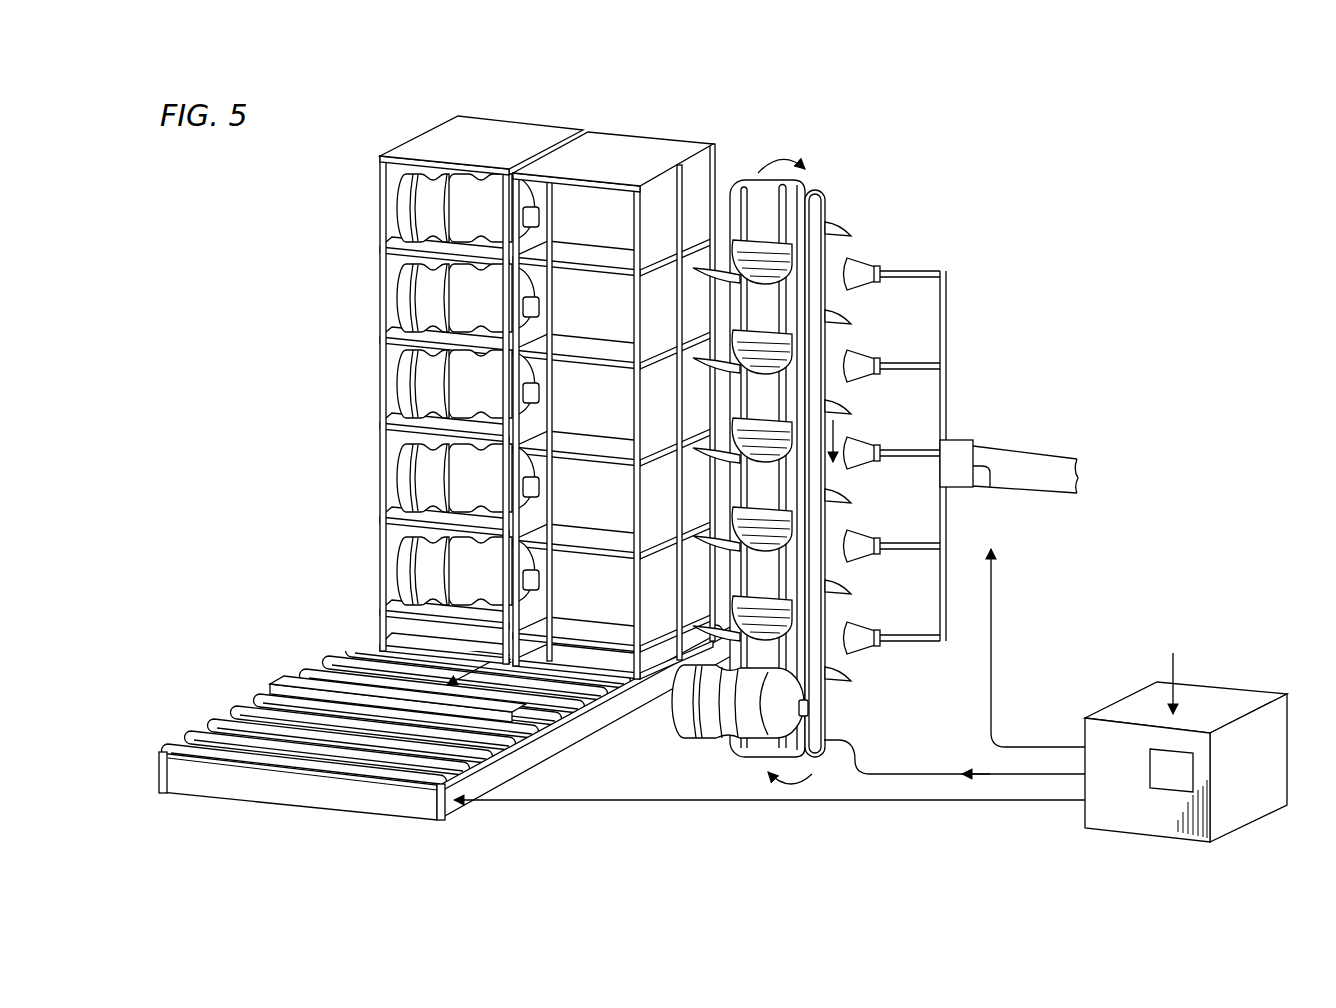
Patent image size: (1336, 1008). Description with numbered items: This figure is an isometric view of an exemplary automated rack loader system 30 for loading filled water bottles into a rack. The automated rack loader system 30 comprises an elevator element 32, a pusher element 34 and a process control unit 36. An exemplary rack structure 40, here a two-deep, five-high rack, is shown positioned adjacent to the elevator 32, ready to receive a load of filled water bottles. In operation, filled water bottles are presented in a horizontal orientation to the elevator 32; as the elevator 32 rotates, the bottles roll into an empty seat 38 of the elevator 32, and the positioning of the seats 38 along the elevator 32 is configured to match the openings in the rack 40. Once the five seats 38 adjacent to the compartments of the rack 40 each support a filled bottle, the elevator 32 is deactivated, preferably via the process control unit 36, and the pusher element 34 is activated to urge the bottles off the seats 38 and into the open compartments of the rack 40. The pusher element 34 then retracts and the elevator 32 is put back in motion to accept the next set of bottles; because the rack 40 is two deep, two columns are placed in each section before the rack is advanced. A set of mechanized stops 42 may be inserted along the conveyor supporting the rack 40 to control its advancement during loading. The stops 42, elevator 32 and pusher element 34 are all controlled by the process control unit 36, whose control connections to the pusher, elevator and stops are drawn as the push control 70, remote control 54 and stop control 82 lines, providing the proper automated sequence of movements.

The automated rack loader system 30 is at (1041, 193).
The elevator element 32 is at (814, 192).
The pusher element 34 is at (942, 346).
The process control unit 36 is at (1245, 812).
The seat 38 is at (794, 256).
The rack structure 40 is at (405, 143).
The mechanized stops 42 is at (268, 686).
The remote control line 54 is at (890, 773).
The push control line 70 is at (992, 597).
The stop control line 82 is at (608, 800).